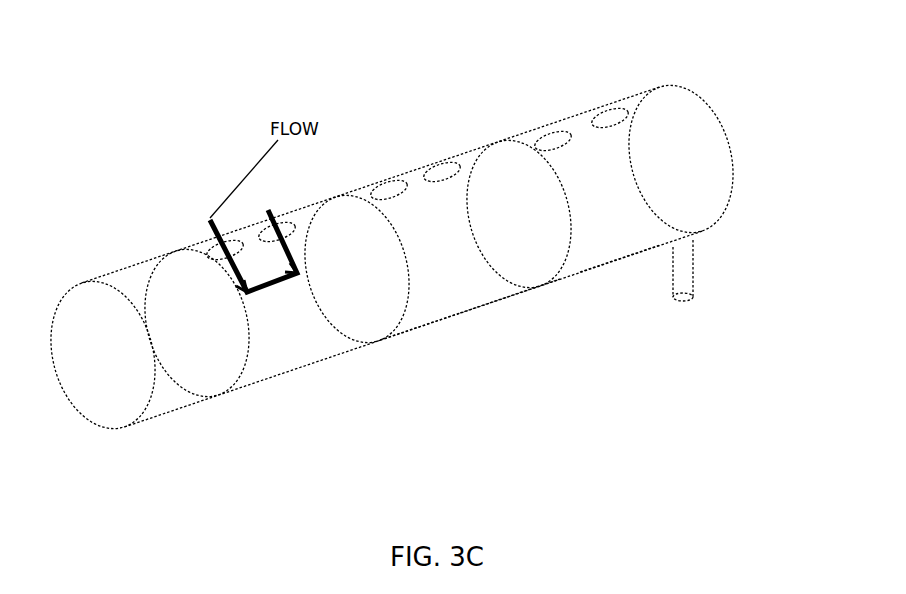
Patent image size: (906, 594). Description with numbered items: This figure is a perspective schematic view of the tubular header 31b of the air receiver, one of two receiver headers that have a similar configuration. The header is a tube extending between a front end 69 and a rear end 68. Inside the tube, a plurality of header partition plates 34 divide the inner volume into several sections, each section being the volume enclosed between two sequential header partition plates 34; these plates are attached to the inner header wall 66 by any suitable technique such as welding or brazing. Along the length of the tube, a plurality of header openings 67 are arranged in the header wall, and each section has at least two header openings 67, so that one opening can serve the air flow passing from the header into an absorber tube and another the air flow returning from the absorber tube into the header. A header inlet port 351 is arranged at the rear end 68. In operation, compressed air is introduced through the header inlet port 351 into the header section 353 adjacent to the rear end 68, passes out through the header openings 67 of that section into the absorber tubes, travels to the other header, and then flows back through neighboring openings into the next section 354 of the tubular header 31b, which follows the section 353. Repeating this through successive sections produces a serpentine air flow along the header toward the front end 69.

The tubular header 31b is at (488, 88).
The front end 69 is at (97, 393).
The rear end 68 is at (687, 150).
The header partition plates 34 is at (520, 217).
The header openings 67 is at (383, 188).
The inner header wall 66 is at (500, 295).
The next section 354 is at (420, 310).
The header section 353 is at (617, 240).
The header inlet port 351 is at (687, 291).